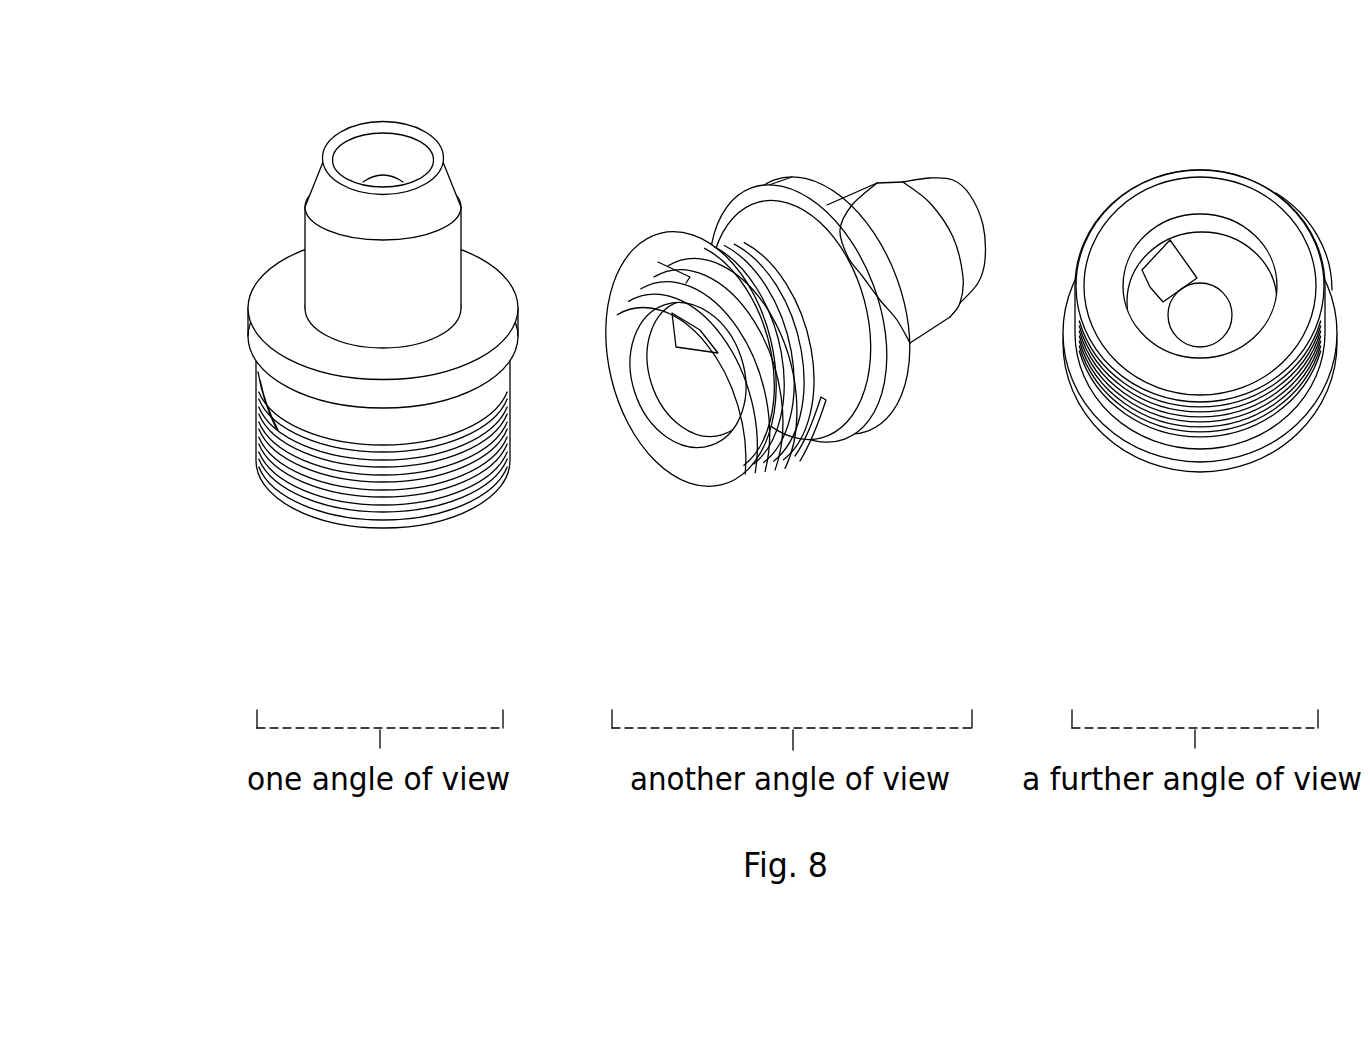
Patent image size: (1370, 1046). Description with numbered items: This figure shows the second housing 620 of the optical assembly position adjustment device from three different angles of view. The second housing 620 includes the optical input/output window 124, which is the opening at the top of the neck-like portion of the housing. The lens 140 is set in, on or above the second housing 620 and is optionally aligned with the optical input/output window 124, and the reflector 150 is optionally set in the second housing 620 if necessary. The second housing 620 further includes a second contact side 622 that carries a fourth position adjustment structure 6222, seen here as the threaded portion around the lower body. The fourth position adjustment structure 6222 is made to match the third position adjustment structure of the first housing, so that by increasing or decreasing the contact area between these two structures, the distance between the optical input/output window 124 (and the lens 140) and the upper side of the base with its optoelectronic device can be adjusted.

The second housing 620 is at (743, 401).
The second contact side 622 is at (328, 423).
The fourth position adjustment structure 6222 is at (438, 485).
The optical input/output window 124 is at (387, 150).
The reflector 150 is at (683, 330).
The lens 140 is at (1213, 312).